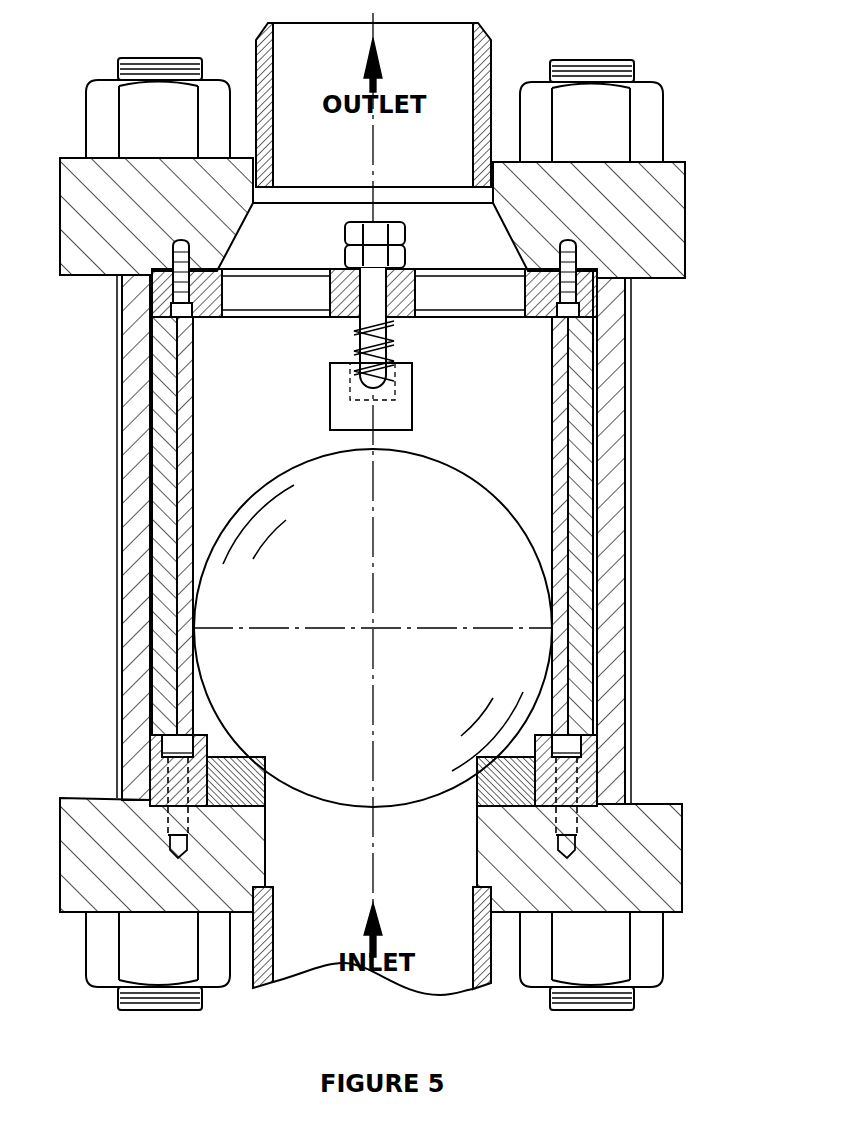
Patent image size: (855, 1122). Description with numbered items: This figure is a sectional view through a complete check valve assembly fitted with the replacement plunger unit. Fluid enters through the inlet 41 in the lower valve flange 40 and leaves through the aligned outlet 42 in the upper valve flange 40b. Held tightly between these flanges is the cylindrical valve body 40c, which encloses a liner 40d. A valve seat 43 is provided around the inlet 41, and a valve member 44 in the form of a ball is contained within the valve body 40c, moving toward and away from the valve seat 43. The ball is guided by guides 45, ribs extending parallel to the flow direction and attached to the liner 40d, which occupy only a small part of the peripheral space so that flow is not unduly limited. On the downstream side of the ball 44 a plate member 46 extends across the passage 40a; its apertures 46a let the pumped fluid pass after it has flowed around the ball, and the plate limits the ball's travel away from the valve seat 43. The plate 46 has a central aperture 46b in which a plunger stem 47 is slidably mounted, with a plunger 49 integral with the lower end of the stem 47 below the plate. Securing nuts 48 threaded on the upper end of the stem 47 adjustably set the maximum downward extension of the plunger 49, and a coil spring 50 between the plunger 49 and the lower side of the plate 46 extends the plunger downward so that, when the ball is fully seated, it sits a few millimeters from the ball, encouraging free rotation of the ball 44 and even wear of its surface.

The lower valve flange 40 is at (643, 818).
The passage 40a is at (230, 410).
The upper valve flange 40b is at (634, 175).
The cylindrical valve body 40c is at (615, 440).
The liner 40d is at (578, 392).
The inlet 41 is at (330, 962).
The outlet 42 is at (458, 65).
The valve seat 43 is at (567, 733).
The valve member 44 is at (457, 490).
The guides 45 is at (555, 517).
The plate member 46 is at (592, 297).
The apertures 46a is at (492, 303).
The central aperture 46b is at (345, 318).
The plunger stem 47 is at (379, 343).
The securing nuts 48 is at (352, 235).
The plunger 49 is at (398, 410).
The coil spring 50 is at (391, 352).